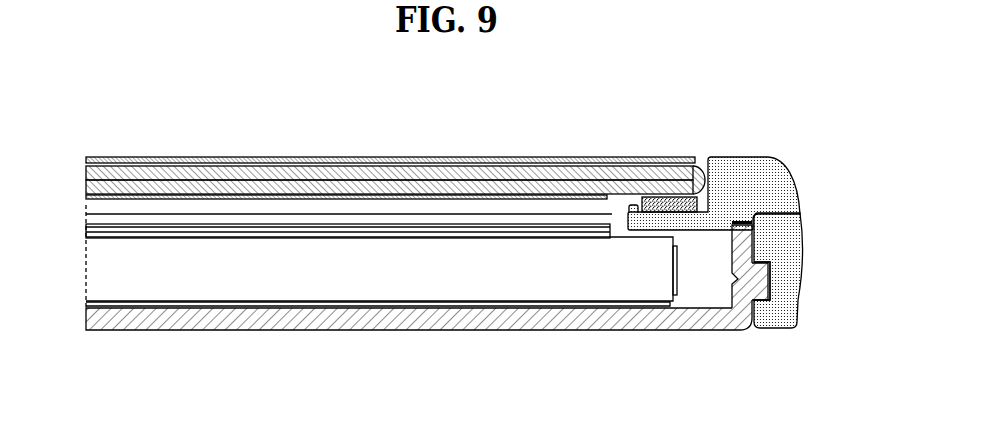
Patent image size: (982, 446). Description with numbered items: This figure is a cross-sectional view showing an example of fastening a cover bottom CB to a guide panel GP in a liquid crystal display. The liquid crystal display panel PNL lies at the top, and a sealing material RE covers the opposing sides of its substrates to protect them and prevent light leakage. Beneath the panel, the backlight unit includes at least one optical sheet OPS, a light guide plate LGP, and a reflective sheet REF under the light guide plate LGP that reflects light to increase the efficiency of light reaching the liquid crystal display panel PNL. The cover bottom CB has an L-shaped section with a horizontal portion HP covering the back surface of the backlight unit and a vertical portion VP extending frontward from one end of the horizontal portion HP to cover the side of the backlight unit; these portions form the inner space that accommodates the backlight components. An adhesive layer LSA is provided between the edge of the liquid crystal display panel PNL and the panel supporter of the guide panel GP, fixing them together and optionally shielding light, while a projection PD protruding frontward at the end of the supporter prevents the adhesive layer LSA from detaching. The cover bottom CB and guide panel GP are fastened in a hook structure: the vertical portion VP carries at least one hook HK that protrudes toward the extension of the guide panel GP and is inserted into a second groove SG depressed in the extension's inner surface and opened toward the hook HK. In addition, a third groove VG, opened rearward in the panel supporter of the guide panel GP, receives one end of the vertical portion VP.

The liquid crystal display panel PNL is at (78, 160).
The optical sheet OPS is at (78, 213).
The light guide plate LGP is at (113, 270).
The reflective sheet REF is at (110, 303).
The projection PD is at (633, 205).
The adhesive layer LSA is at (663, 205).
The sealing material RE is at (698, 168).
The third groove VG is at (758, 218).
The guide panel GP is at (800, 242).
The second groove SG is at (765, 262).
The hook HK is at (765, 287).
The horizontal portion HP is at (684, 312).
The vertical portion VP is at (745, 297).
The cover bottom CB is at (476, 326).